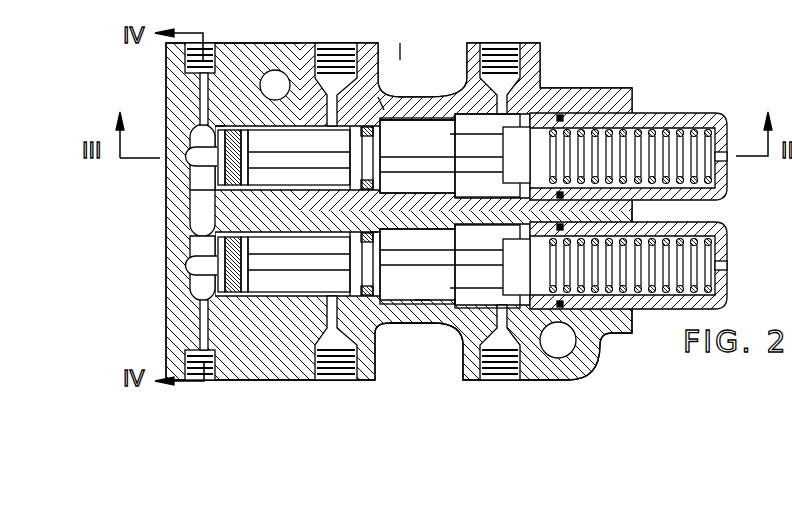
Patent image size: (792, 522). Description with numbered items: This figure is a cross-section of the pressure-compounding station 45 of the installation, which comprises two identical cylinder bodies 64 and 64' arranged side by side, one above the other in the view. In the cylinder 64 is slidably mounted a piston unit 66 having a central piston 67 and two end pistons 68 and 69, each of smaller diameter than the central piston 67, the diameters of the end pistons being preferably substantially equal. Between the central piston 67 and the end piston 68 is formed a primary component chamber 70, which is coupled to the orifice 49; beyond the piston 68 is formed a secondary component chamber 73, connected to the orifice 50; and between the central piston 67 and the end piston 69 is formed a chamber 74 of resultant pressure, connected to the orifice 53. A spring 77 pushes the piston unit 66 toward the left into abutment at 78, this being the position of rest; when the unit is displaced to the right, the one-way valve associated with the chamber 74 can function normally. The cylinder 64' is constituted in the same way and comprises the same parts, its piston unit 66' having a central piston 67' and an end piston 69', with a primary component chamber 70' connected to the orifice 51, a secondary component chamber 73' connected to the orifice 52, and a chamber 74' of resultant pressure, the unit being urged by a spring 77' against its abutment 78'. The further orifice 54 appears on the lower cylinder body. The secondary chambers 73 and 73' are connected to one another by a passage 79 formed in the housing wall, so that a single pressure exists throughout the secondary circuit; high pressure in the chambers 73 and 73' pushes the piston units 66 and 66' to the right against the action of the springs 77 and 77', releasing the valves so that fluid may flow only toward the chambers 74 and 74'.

The station 45 is at (166, 222).
The orifice 49 is at (357, 44).
The orifice 50 is at (216, 45).
The orifice 51 is at (343, 382).
The orifice 52 is at (216, 380).
The orifice 53 is at (507, 44).
The threaded port 54 is at (490, 382).
The cylinder body 64 is at (417, 93).
The cylinder body 64' is at (414, 349).
The piston unit 66 is at (272, 138).
The piston unit 66' is at (260, 296).
The central piston 67 is at (396, 77).
The central piston 67' is at (381, 210).
The end piston 68 is at (218, 125).
The end piston 69 is at (541, 91).
The end piston 69' is at (502, 258).
The primary component chamber 70 is at (333, 168).
The primary component chamber 70' is at (332, 252).
The secondary component chamber 73 is at (177, 139).
The secondary component chamber 73' is at (172, 267).
The chamber of resultant pressure 74 is at (420, 111).
The chamber of resultant pressure 74' is at (423, 326).
The spring 77 is at (628, 143).
The spring 77' is at (650, 255).
The abutment 78 is at (178, 144).
The abutment 78' is at (159, 269).
The passage 79 is at (193, 207).